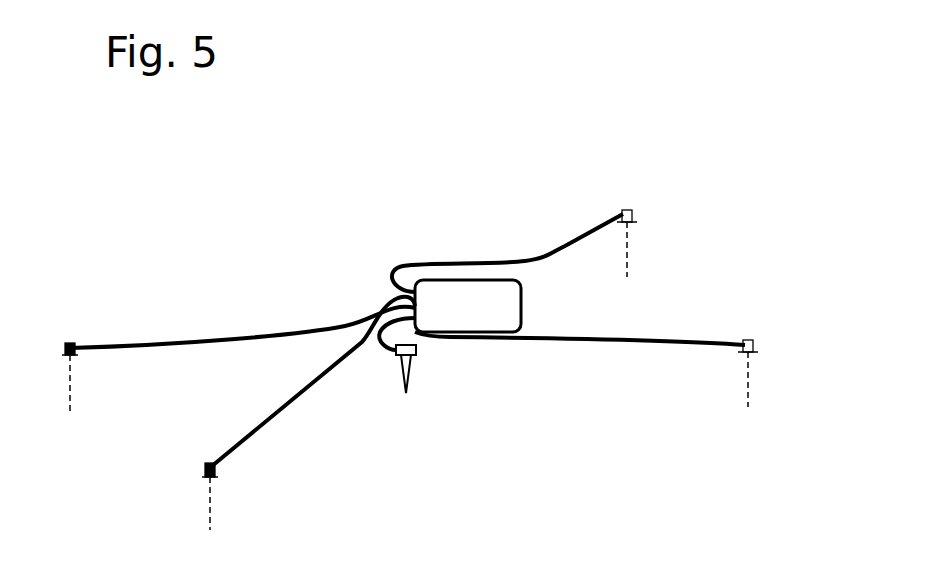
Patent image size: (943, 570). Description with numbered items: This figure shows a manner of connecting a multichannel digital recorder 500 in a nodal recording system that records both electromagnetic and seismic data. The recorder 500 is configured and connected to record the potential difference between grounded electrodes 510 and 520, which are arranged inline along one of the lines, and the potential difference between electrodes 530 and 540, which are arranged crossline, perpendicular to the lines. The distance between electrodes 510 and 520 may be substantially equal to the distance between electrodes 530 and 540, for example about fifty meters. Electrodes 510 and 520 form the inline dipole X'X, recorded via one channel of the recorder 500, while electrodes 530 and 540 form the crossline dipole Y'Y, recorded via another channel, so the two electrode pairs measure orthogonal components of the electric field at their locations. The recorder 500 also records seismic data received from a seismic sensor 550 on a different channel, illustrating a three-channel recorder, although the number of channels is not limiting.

The multichannel digital recorder 500 is at (521, 302).
The grounded electrode 510 is at (70, 343).
The grounded electrode 520 is at (748, 340).
The electrode 530 is at (627, 210).
The electrode 540 is at (209, 463).
The seismic sensor 550 is at (416, 351).